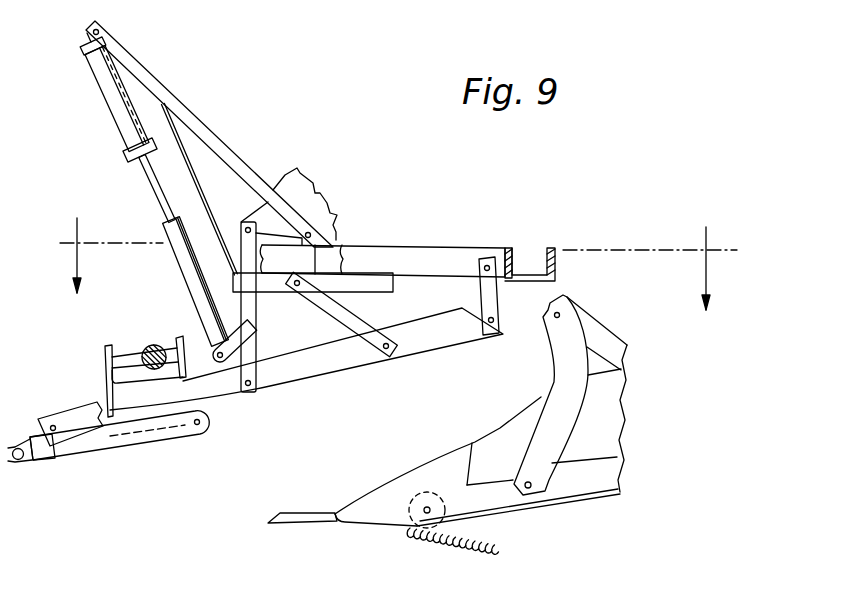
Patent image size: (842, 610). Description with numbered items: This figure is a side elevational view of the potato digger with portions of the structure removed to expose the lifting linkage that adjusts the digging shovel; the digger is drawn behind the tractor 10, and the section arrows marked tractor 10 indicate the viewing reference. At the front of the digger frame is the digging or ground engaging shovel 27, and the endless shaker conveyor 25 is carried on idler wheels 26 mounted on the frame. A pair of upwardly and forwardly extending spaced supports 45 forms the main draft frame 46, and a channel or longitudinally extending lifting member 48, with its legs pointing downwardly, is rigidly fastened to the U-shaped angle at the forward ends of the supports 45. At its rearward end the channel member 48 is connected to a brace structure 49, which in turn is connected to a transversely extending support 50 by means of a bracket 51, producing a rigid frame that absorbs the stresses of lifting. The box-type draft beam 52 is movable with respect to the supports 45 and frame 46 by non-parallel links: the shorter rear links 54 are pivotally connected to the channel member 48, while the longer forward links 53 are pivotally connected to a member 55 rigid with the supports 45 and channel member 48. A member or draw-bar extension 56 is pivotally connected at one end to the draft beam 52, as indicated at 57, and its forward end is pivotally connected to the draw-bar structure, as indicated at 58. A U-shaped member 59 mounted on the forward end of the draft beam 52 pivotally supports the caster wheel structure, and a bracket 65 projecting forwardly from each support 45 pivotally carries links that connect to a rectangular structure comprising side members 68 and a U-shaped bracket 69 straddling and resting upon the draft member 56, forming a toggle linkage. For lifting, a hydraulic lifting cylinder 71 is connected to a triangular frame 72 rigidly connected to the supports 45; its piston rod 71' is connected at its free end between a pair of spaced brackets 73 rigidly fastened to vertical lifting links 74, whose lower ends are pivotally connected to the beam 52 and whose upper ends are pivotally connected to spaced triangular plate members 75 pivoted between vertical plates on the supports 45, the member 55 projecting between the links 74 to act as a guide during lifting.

The tractor 10 is at (387, 271).
The triangular frame 72 is at (180, 105).
The hydraulic lifting cylinder 71 is at (104, 97).
The piston rod 71' is at (162, 251).
The triangular plate member 75 is at (285, 183).
The bracket 65 is at (280, 258).
The support 45 is at (320, 257).
The main draft frame 46 is at (355, 258).
The channel or longitudinally extending lifting member 48 is at (457, 263).
The brace structure 49 is at (507, 250).
The transversely extending support 50 is at (557, 268).
The bracket 51 is at (530, 253).
The rear link 54 is at (492, 292).
The member 55 is at (383, 283).
The forward link 53 is at (343, 314).
The box-type draft beam 52 is at (377, 357).
The vertical lifting link 74 is at (250, 372).
The bracket 73 is at (232, 356).
The U-shaped member 59 is at (106, 352).
The side member 68 is at (72, 408).
The member or draw-bar extension 56 is at (103, 438).
The pivotal connection 57 is at (207, 421).
The pivotal connection 58 is at (21, 459).
The U-shaped bracket 69 is at (72, 444).
The idler wheel 26 is at (421, 492).
The digging or ground engaging shovel 27 is at (353, 515).
The endless shaker conveyor 25 is at (427, 542).